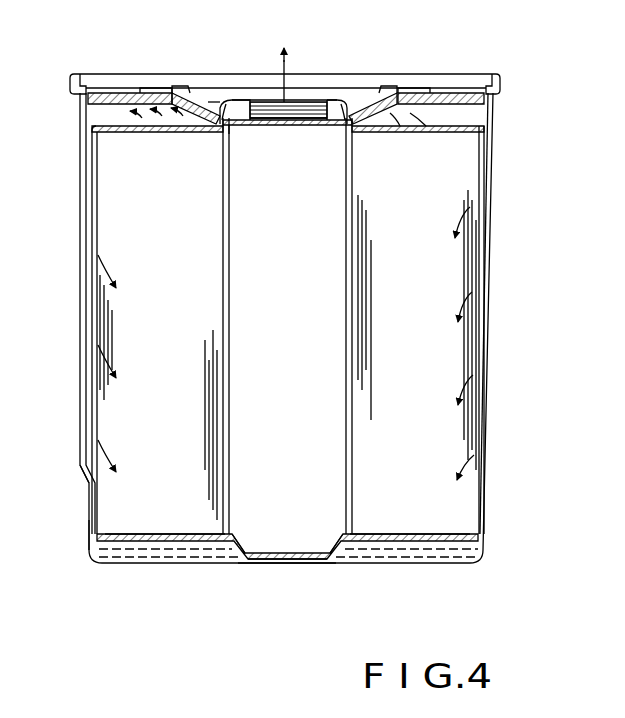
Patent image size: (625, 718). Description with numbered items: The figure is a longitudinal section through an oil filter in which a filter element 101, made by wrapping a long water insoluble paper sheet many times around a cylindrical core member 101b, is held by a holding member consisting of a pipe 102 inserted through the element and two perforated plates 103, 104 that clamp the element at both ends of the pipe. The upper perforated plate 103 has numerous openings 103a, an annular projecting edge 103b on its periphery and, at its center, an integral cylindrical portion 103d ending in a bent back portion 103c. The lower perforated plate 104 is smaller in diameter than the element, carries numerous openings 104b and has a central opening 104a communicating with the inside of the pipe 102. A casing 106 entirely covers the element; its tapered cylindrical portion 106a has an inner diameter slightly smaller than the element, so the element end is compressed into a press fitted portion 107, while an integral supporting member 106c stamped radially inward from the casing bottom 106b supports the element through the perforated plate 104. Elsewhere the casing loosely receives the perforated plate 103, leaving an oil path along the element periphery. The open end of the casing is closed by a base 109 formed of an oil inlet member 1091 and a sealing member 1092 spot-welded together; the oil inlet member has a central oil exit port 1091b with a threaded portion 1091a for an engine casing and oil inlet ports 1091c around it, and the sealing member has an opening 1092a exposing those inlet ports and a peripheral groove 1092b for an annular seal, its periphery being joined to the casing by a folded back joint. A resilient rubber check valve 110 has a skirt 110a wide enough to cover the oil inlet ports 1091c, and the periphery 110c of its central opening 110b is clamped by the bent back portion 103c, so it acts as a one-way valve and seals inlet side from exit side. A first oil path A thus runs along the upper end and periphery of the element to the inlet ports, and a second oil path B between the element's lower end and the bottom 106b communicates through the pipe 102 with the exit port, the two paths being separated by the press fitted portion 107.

The filter element 101 is at (428, 308).
The cylindrical core member 101b is at (220, 299).
The pipe 102 is at (229, 298).
The perforated plate 103 is at (486, 128).
The openings 103a is at (165, 140).
The annular projecting edge 103b is at (487, 140).
The bent back portion 103c is at (228, 92).
The cylindrical portion 103d is at (234, 128).
The perforated plate 104 is at (458, 536).
The opening 104a is at (288, 542).
The openings 104b is at (162, 534).
The casing 106 is at (80, 349).
The tapered cylindrical portion 106a is at (89, 524).
The casing bottom 106b is at (312, 560).
The supporting member 106c is at (262, 538).
The press fitted portion 107 is at (88, 489).
The base 109 is at (500, 51).
The oil inlet member 1091 is at (334, 86).
The threaded portion 1091a is at (280, 85).
The oil exit port 1091b is at (306, 128).
The oil inlet ports 1091c is at (196, 86).
The sealing member 1092 is at (108, 74).
The opening 1092a is at (396, 88).
The groove 1092b is at (155, 86).
The check valve 110 is at (207, 84).
The skirt 110a is at (200, 112).
The central opening 110b is at (278, 121).
The periphery 110c is at (372, 84).
The first oil path A is at (102, 116).
The second oil path B is at (118, 548).